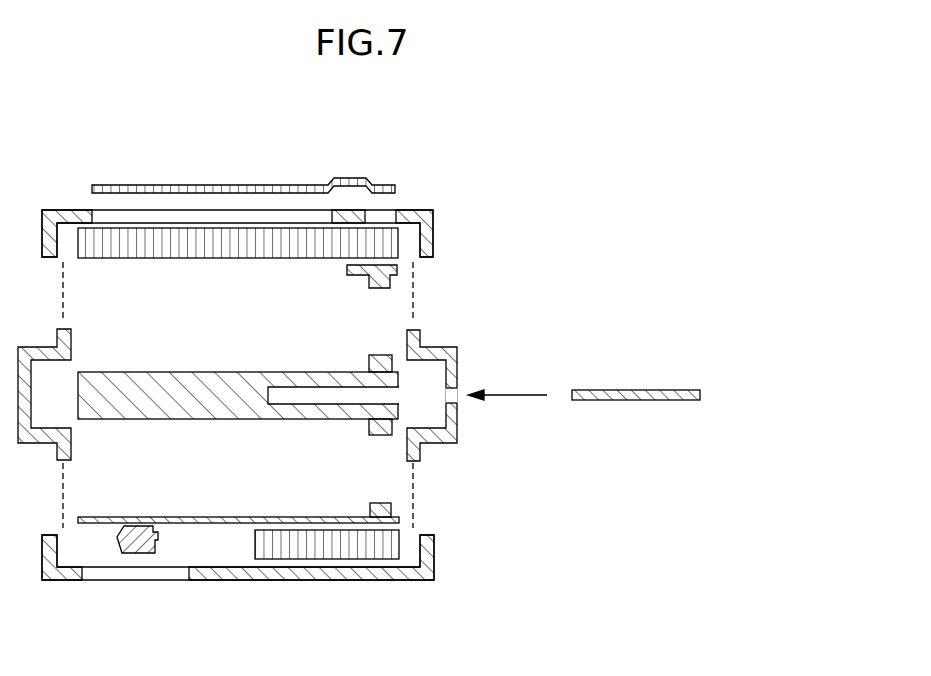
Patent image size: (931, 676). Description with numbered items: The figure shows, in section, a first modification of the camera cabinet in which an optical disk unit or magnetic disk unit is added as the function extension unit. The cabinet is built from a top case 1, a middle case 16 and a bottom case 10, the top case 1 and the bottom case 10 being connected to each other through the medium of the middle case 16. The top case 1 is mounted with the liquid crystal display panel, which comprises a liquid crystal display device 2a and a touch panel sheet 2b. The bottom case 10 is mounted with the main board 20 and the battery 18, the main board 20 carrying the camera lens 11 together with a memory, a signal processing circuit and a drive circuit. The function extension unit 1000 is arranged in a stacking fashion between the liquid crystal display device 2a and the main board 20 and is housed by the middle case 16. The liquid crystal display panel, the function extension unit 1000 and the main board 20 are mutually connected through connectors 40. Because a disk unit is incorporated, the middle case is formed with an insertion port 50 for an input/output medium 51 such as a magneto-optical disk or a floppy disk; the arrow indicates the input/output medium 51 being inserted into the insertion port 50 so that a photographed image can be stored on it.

The top case 1 is at (433, 239).
The liquid crystal display device 2a is at (157, 262).
The touch panel sheet 2b is at (363, 183).
The bottom case 10 is at (436, 556).
The camera lens 11 is at (157, 542).
The middle case 16 is at (457, 432).
The battery 18 is at (330, 555).
The main board 20 is at (121, 518).
The connectors 40 is at (370, 288).
The insertion port 50 is at (457, 390).
The input/output medium 51 is at (667, 389).
The function extension unit 1000 is at (212, 410).